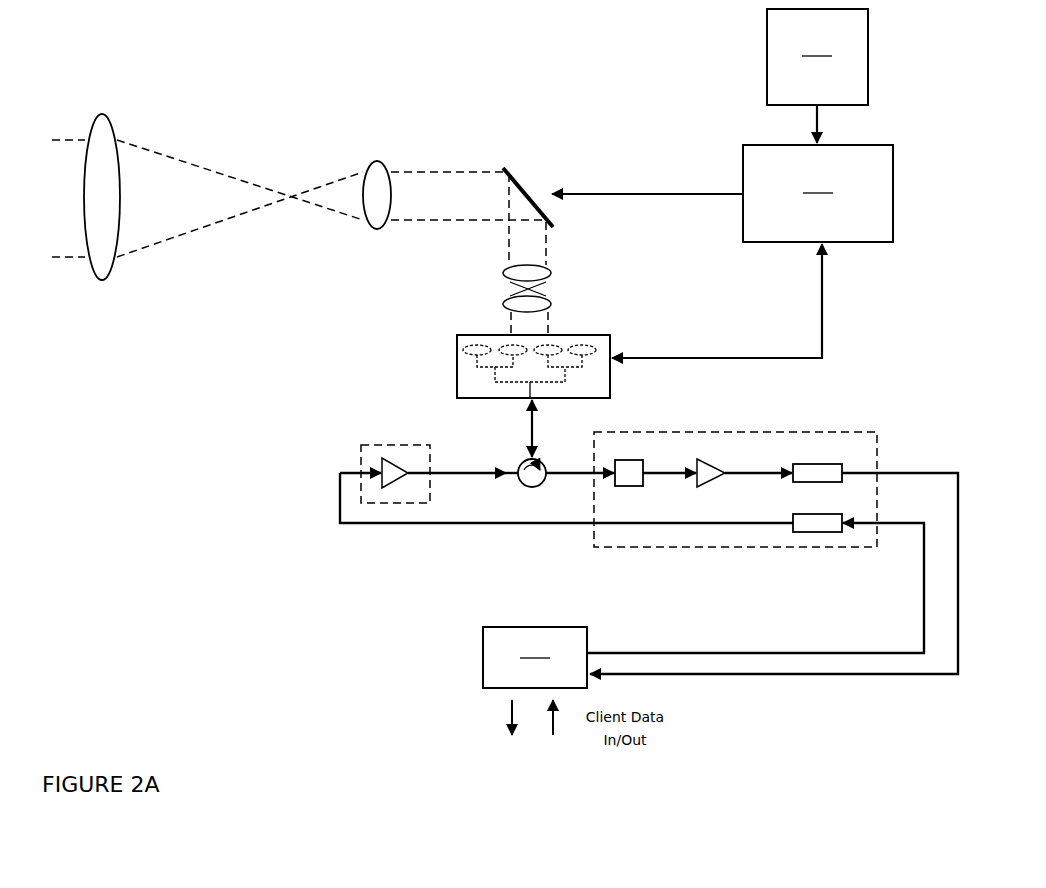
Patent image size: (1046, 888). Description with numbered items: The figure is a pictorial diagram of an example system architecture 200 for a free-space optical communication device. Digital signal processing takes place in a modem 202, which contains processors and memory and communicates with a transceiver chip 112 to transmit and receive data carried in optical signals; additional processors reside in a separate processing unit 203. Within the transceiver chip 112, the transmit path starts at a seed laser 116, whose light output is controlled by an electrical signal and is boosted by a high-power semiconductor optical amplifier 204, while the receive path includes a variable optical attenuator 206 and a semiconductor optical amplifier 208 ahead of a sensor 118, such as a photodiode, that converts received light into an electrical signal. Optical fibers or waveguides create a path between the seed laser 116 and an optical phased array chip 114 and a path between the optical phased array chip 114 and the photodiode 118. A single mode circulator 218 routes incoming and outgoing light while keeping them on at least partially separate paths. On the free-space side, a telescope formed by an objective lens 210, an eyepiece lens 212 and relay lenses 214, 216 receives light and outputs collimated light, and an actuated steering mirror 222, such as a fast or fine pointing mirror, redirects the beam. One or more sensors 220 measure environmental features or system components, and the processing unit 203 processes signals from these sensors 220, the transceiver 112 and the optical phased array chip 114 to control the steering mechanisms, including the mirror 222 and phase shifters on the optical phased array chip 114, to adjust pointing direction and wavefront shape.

The free space optical communication system 200 is at (114, 760).
The modem 202 is at (535, 657).
The processing unit 203 is at (818, 193).
The high-power semiconductor optical amplifier 204 is at (361, 462).
The variable optical attenuator 206 is at (612, 456).
The semiconductor optical amplifier 208 is at (712, 466).
The objective lens 210 is at (108, 121).
The eyepiece lens 212 is at (386, 163).
The relay lens 214 is at (551, 272).
The relay lens 216 is at (548, 301).
The single mode circulator 218 is at (545, 462).
The sensors 220 is at (817, 57).
The actuated/steering mirror 222 is at (505, 165).
The transceiver 112 is at (742, 432).
The optical phased array photonic integrated chip 114 is at (457, 360).
The seed laser 116 is at (808, 514).
The sensor 118 is at (808, 464).